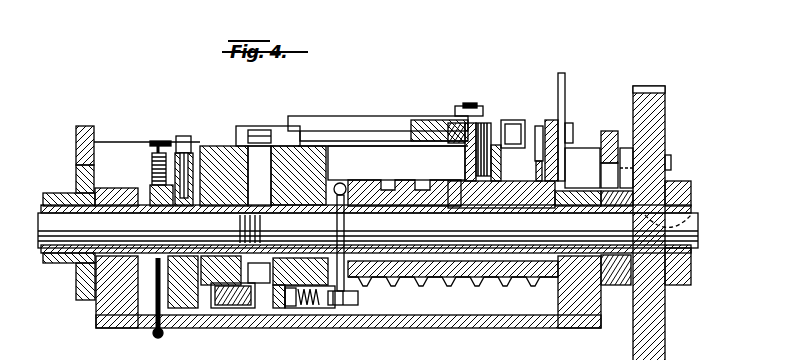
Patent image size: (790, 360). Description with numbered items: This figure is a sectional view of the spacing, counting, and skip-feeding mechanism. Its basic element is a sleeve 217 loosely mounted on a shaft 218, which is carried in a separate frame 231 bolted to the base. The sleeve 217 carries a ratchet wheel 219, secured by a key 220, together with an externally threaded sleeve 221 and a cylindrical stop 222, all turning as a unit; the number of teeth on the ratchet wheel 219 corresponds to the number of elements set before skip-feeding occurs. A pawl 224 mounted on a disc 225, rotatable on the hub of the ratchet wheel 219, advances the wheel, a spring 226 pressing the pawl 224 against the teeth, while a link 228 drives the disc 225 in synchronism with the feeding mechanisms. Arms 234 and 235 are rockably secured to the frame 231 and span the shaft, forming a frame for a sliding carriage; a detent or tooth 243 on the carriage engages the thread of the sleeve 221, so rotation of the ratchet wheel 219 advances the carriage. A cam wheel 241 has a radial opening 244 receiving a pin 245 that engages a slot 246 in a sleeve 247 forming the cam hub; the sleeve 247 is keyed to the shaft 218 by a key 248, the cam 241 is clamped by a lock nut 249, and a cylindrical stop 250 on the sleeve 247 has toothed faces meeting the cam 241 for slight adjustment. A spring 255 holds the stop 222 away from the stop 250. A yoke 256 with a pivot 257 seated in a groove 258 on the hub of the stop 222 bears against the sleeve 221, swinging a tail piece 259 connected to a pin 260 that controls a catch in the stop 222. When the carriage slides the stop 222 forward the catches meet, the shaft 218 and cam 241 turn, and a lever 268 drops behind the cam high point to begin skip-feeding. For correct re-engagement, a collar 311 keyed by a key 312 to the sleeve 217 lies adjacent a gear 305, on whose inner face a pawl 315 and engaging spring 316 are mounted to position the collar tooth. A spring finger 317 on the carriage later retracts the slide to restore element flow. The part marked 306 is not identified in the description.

The sleeve 217 is at (452, 172).
The shaft 218 is at (690, 232).
The ratchet wheel 219 is at (527, 275).
The key 220 is at (500, 275).
The externally threaded sleeve 221 is at (455, 275).
The cylindrical stop 222 is at (310, 318).
The pawl 224 is at (582, 168).
The disc 225 is at (565, 118).
The spring 226 is at (531, 118).
The link 228 is at (557, 85).
The frame 231 is at (88, 308).
The arm 234 is at (625, 128).
The arm 235 is at (68, 135).
The cam wheel 241 is at (178, 128).
The detent or tooth 243 is at (366, 229).
The radial opening 244 is at (215, 138).
The pin 245 is at (152, 133).
The slot 246 is at (184, 228).
The sleeve 247 is at (289, 227).
The key 248 is at (224, 228).
The lock nut 249 is at (142, 184).
The cylindrical stop 250 is at (245, 118).
The spring 255 is at (268, 218).
The yoke 256 is at (340, 175).
The pivot 257 is at (337, 218).
The groove 258 is at (333, 175).
The tail piece 259 is at (337, 300).
The pin 260 is at (350, 290).
The lever 268 is at (172, 128).
The gear 305 is at (657, 320).
The bearing 306 is at (35, 172).
The collar 311 is at (597, 280).
The key 312 is at (600, 278).
The pawl 315 is at (663, 160).
The engaging spring 316 is at (610, 140).
The spring finger 317 is at (385, 108).